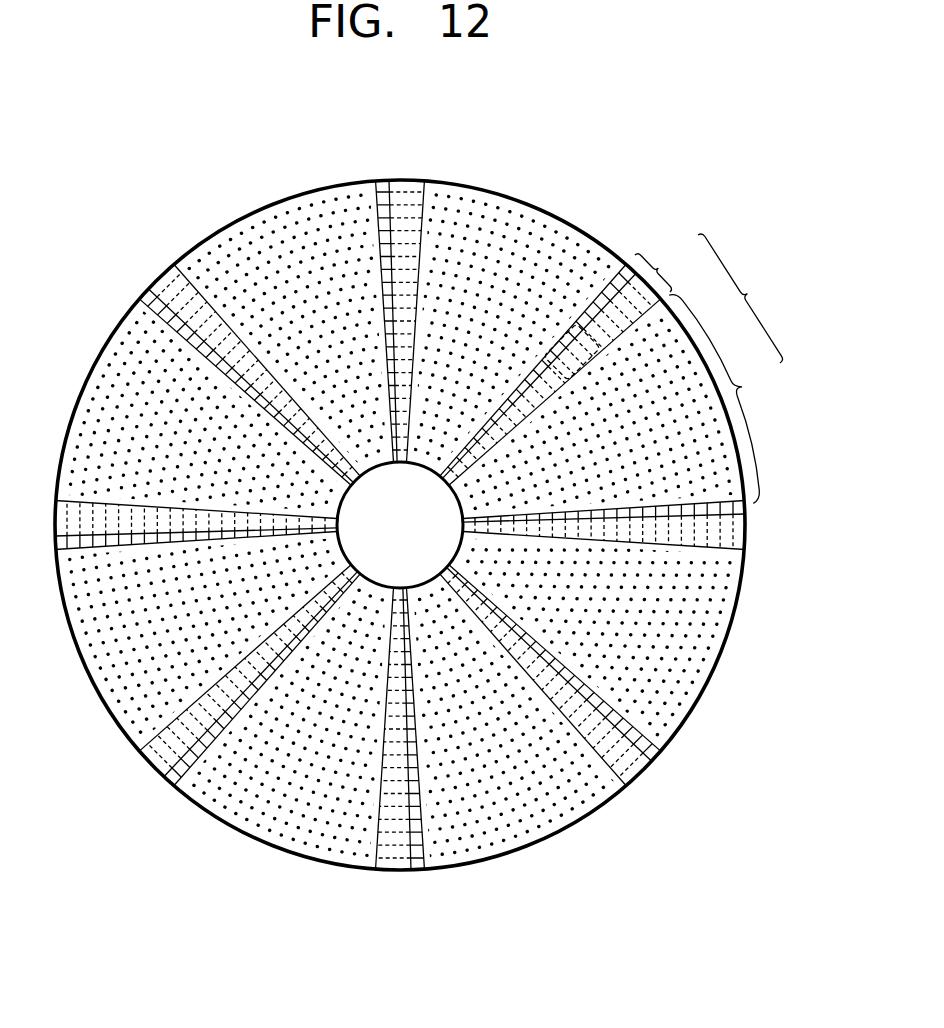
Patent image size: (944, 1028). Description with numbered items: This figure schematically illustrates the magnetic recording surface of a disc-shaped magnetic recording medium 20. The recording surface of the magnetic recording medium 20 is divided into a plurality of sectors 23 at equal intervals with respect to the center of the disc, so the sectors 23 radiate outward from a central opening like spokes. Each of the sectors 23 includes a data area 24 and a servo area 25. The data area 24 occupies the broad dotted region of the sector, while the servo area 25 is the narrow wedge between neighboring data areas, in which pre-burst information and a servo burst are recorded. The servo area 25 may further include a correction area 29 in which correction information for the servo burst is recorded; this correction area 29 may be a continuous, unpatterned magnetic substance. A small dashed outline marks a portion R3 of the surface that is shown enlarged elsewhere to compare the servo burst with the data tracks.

The magnetic recording medium 20 is at (97, 228).
The portion R3 is at (560, 325).
The correction area 29 is at (627, 265).
The servo area 25 is at (665, 262).
The sector 23 is at (742, 298).
The data area 24 is at (723, 399).